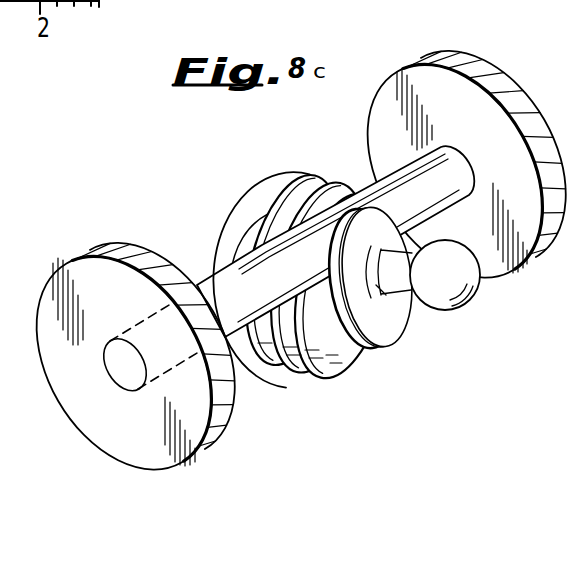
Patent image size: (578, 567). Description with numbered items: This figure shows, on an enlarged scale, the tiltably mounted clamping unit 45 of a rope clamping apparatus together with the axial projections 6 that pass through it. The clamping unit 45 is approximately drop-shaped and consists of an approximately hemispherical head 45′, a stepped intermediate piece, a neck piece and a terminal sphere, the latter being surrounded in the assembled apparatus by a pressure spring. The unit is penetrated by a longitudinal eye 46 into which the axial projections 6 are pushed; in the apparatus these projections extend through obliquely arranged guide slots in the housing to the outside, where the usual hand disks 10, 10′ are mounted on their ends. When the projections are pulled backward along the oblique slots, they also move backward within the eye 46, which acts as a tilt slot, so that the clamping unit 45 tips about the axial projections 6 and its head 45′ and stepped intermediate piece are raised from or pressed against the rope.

The hand disk 10 is at (512, 99).
The hand disk 10′ is at (116, 258).
The axial projections 6 is at (380, 197).
The clamping unit 45 is at (267, 166).
The approximately hemispherical head 45′ is at (236, 198).
The longitudinal eye 46 is at (246, 240).